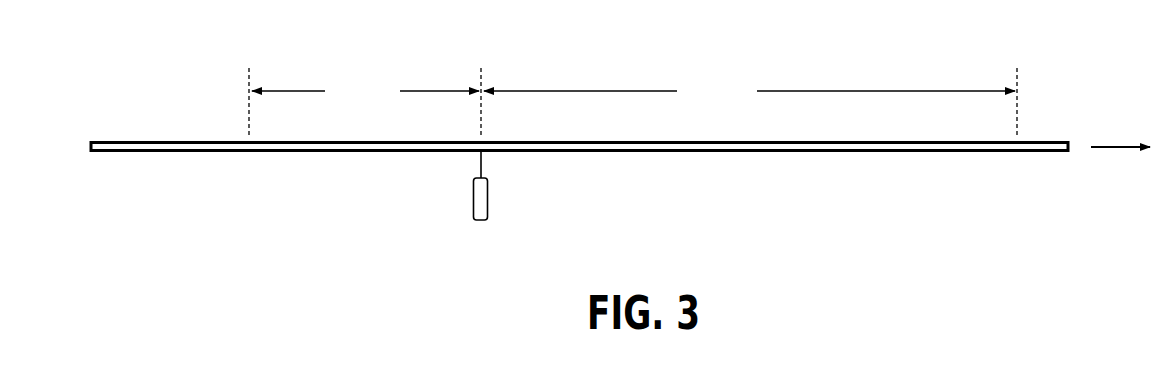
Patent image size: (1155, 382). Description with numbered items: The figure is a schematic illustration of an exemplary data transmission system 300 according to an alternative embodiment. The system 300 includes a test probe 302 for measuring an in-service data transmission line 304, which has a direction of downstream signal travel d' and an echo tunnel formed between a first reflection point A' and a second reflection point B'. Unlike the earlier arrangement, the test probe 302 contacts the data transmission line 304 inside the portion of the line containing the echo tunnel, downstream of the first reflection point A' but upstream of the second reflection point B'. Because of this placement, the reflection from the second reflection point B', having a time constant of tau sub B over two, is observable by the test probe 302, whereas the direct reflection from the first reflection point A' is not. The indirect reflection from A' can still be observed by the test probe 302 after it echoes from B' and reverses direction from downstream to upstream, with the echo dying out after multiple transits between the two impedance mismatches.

The data transmission system 300 is at (208, 92).
The test probe 302 is at (849, 153).
The data transmission line 304 is at (488, 197).